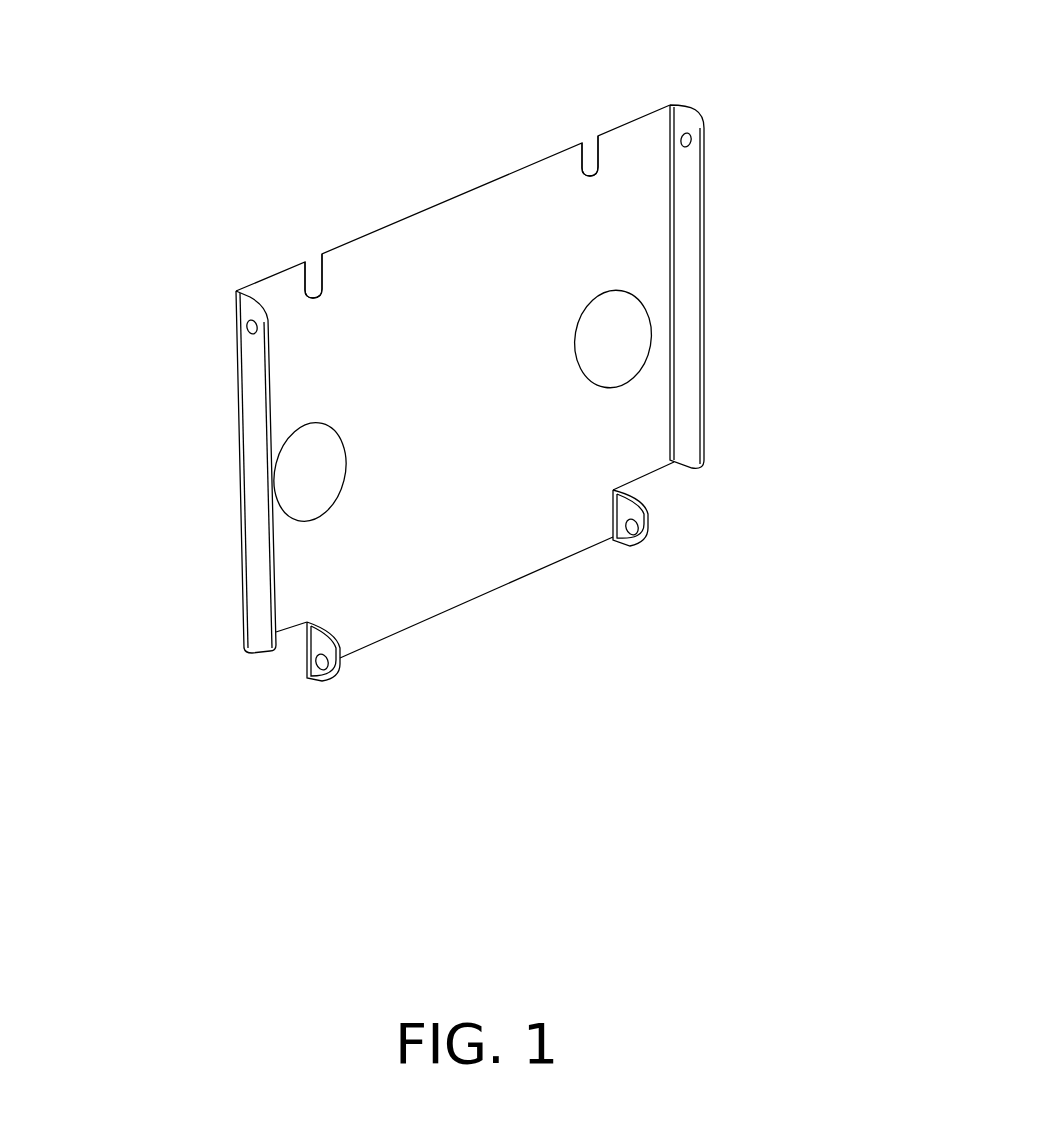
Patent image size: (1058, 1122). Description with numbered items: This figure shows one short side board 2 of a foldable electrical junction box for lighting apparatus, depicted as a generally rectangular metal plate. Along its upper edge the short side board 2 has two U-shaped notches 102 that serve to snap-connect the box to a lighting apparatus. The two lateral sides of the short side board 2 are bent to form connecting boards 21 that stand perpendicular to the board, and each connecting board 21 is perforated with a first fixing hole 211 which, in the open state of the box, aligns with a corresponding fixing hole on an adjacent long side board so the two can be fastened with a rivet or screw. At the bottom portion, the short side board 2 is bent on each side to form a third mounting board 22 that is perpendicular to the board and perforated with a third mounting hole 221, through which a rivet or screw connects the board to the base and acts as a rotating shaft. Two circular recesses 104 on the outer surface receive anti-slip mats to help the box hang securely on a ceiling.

The short side board 2 is at (450, 562).
The U-shaped notch 102 is at (315, 268).
The circular recess 104 is at (300, 488).
The connecting board 21 is at (258, 562).
The first fixing hole 211 is at (252, 332).
The third mounting board 22 is at (313, 640).
The third mounting hole 221 is at (330, 672).